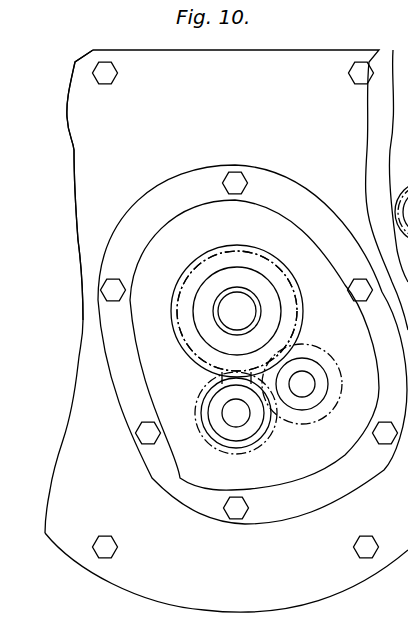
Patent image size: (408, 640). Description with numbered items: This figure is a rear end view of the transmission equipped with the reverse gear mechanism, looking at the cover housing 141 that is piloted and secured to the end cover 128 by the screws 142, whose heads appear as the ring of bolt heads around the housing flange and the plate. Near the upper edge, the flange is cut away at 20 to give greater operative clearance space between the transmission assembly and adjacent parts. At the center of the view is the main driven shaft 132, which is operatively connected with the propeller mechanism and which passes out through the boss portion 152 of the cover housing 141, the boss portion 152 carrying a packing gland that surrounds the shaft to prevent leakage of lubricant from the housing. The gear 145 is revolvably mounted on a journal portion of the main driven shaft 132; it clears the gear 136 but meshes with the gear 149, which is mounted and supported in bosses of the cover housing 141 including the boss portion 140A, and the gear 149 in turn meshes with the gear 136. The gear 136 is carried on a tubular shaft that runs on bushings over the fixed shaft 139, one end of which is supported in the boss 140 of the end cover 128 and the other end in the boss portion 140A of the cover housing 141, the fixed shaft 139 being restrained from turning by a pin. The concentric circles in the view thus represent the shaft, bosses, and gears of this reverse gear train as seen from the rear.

The cut away portion of flange 20 is at (345, 33).
The end cover 128 is at (92, 147).
The main driven shaft 132 is at (217, 311).
The gear 136 is at (252, 448).
The fixed shaft 139 is at (225, 411).
The boss 140 is at (221, 440).
The boss portion 140A is at (263, 262).
The cover housing 141 is at (112, 362).
The screws 142 is at (100, 290).
The gear 145 is at (190, 342).
The gear 149 is at (313, 348).
The boss portion 152 is at (268, 288).